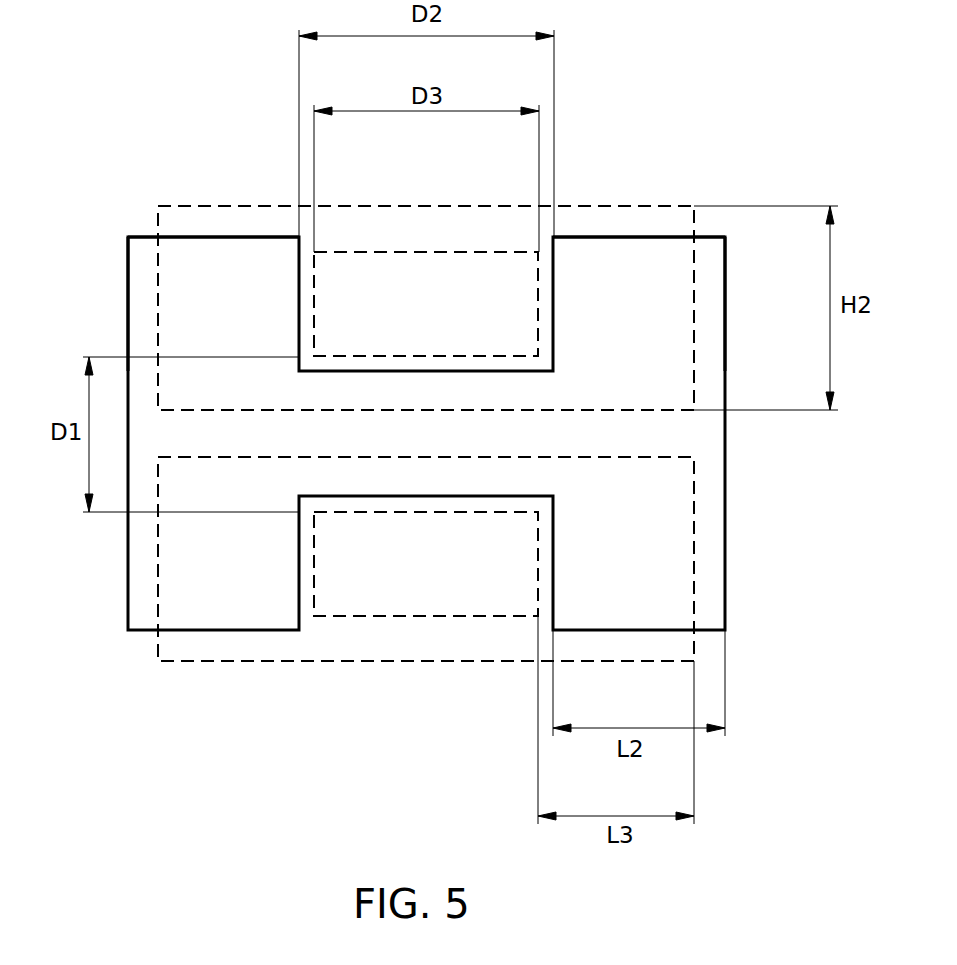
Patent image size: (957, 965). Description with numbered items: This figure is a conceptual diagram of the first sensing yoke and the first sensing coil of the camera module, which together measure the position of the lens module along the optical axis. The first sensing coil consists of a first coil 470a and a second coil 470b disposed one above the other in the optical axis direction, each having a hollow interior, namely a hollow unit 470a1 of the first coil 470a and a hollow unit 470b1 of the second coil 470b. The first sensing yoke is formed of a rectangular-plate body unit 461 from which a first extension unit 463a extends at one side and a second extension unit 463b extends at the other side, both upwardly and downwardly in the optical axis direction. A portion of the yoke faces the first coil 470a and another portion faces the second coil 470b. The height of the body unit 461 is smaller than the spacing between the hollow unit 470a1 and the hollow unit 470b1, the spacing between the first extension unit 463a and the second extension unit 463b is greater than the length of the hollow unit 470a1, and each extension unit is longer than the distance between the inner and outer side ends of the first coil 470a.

The body unit 461 is at (358, 482).
The first extension unit 463a is at (202, 252).
The second extension unit 463b is at (715, 248).
The first coil 470a is at (694, 297).
The hollow unit of the first coil 470a1 is at (406, 283).
The second coil 470b is at (694, 541).
The hollow unit of the second coil 470b1 is at (463, 574).